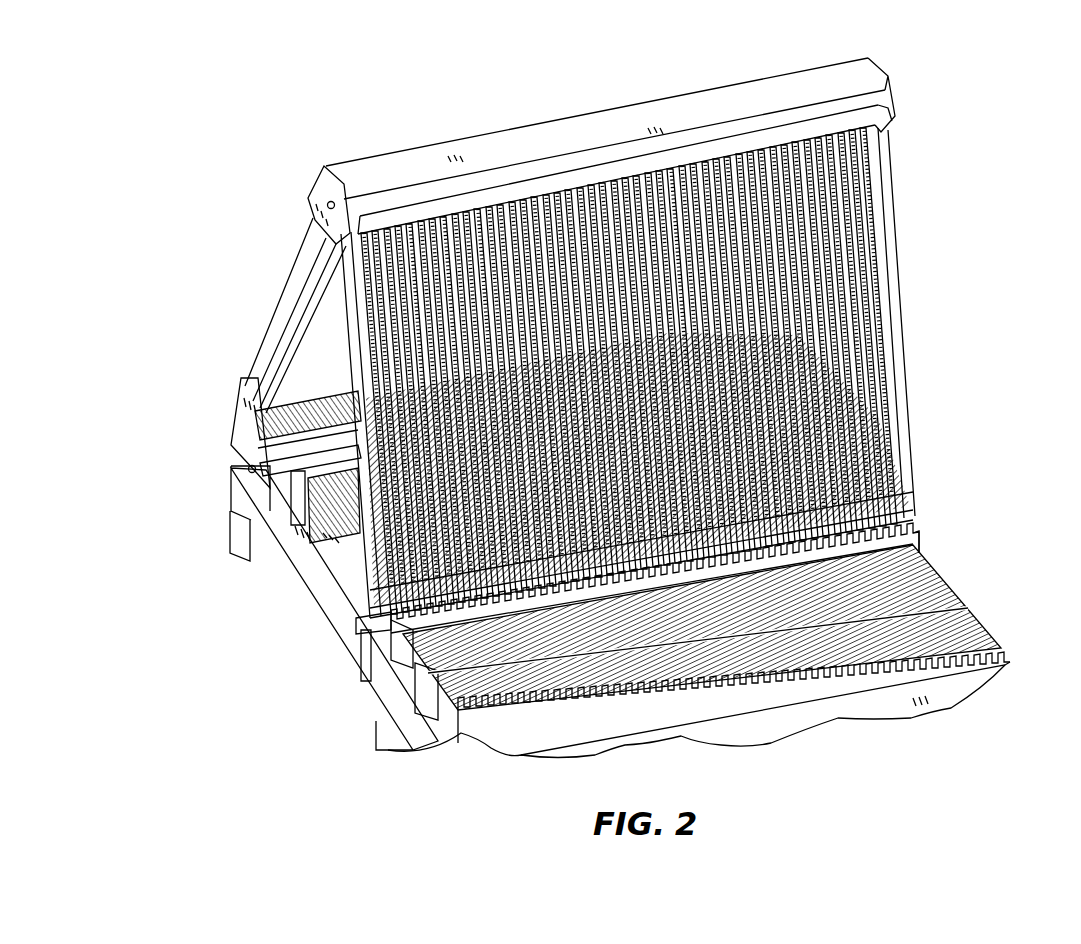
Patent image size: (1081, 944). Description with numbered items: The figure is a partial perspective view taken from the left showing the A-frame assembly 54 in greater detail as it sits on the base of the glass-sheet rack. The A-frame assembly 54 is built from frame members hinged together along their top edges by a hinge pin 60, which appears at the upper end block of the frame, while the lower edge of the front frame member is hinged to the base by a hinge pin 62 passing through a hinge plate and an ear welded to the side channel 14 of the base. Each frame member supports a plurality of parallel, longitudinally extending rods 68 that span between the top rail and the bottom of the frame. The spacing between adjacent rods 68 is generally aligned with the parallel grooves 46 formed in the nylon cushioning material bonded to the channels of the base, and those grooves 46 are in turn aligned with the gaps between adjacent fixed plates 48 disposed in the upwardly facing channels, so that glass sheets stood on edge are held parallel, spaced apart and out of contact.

The side channel 14 is at (300, 564).
The grooves 46 is at (730, 611).
The fixed plates 48 is at (928, 560).
The A-frame assembly 54 is at (641, 346).
The hinge pin 60 is at (313, 190).
The hinge pin 62 is at (236, 458).
The rods 68 is at (818, 305).